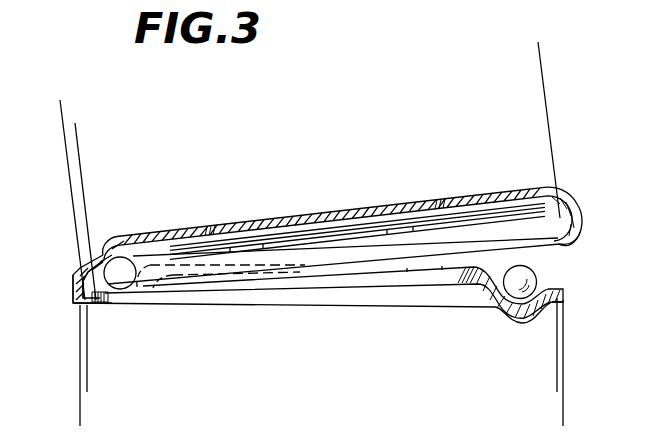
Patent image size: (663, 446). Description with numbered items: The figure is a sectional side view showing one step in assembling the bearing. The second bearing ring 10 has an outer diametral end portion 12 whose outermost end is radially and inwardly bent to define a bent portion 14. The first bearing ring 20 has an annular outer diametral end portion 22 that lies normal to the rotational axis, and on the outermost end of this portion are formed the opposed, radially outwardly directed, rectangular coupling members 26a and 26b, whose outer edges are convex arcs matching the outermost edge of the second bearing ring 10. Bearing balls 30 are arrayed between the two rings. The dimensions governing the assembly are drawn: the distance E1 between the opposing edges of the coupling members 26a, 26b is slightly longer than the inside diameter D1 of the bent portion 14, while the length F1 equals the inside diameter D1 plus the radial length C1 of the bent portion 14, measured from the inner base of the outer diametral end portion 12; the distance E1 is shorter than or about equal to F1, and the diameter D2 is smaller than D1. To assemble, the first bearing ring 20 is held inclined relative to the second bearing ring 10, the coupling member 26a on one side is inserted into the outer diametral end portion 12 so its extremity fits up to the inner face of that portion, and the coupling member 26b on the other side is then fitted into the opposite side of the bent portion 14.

The second bearing ring 10 is at (486, 194).
The outer diametral end portion 12 is at (82, 282).
The bent portion 14 is at (100, 306).
The first bearing ring 20 is at (517, 309).
The outer diametral end portion 22 is at (100, 256).
The coupling member 26a is at (77, 295).
The coupling member 26b is at (563, 295).
The bearing balls 30 is at (518, 285).
The length F1 is at (538, 47).
The inside diameter D1 is at (543, 86).
The radial length C1 is at (65, 145).
The diameter D2 is at (557, 381).
The opposing distance E1 is at (563, 417).